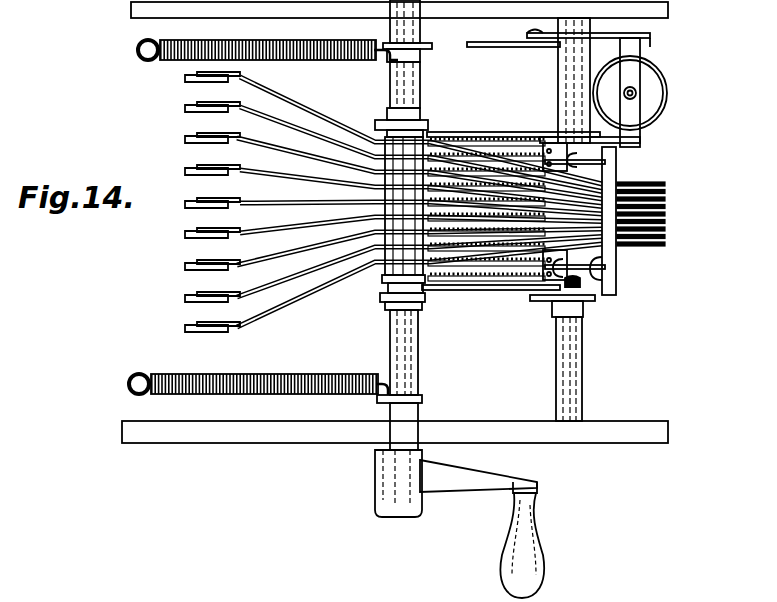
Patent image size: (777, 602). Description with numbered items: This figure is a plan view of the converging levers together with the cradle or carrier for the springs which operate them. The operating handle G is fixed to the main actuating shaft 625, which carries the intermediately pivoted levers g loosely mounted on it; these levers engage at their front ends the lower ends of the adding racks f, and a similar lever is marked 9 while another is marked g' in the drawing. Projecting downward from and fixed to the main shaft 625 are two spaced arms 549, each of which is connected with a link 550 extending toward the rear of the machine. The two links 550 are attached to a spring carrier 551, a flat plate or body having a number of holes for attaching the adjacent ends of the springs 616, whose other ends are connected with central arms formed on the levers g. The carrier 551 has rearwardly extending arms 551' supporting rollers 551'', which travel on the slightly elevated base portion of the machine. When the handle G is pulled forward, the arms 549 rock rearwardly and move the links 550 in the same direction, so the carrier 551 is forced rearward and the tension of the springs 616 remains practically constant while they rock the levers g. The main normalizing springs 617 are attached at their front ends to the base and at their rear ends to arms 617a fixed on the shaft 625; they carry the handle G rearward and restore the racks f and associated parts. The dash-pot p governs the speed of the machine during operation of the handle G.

The main normalizing spring 617 is at (256, 394).
The arm 617a is at (425, 398).
The main actuating shaft 625 is at (410, 356).
The spaced arm 549 is at (374, 296).
The spring 616 is at (492, 291).
The link 550 is at (481, 291).
The spring carrier 551 is at (604, 211).
The rearwardly extending arm 551' is at (669, 92).
The roller 551'' is at (612, 276).
The dash-pot p is at (638, 93).
The adding rack f is at (178, 297).
The spring arm 9 is at (288, 99).
The intermediately pivoted lever g is at (419, 285).
The spring arm g' is at (421, 188).
The operating handle G is at (473, 484).